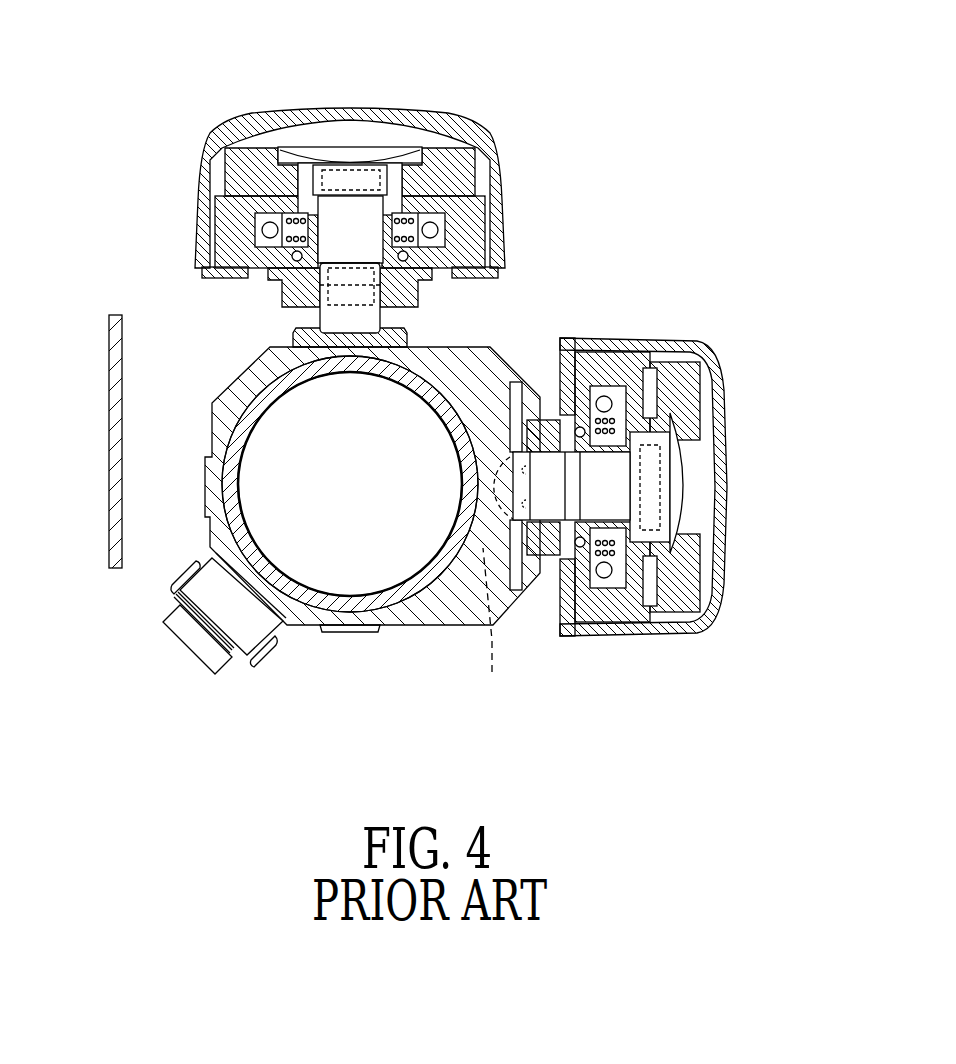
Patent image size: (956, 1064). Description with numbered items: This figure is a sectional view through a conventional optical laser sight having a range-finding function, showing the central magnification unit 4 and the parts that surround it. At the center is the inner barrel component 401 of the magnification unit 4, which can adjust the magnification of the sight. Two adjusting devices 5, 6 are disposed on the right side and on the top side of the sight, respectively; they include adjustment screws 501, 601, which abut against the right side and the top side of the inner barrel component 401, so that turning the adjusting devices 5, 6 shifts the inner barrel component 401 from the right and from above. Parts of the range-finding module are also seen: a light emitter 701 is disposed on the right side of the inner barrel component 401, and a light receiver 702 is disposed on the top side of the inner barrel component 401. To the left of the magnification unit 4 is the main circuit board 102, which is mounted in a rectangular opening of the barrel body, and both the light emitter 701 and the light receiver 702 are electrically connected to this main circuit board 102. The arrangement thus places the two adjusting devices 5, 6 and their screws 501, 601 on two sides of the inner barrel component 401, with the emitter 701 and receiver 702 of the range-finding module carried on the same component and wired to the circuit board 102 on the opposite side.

The magnification unit 4 is at (336, 630).
The inner barrel component 401 is at (369, 634).
The light receiver 702 is at (410, 333).
The light emitter 701 is at (495, 582).
The main circuit board 102 is at (108, 470).
The adjusting device 6 is at (459, 112).
The adjustment screw 601 is at (365, 267).
The adjusting device 5 is at (719, 370).
The adjustment screw 501 is at (563, 502).